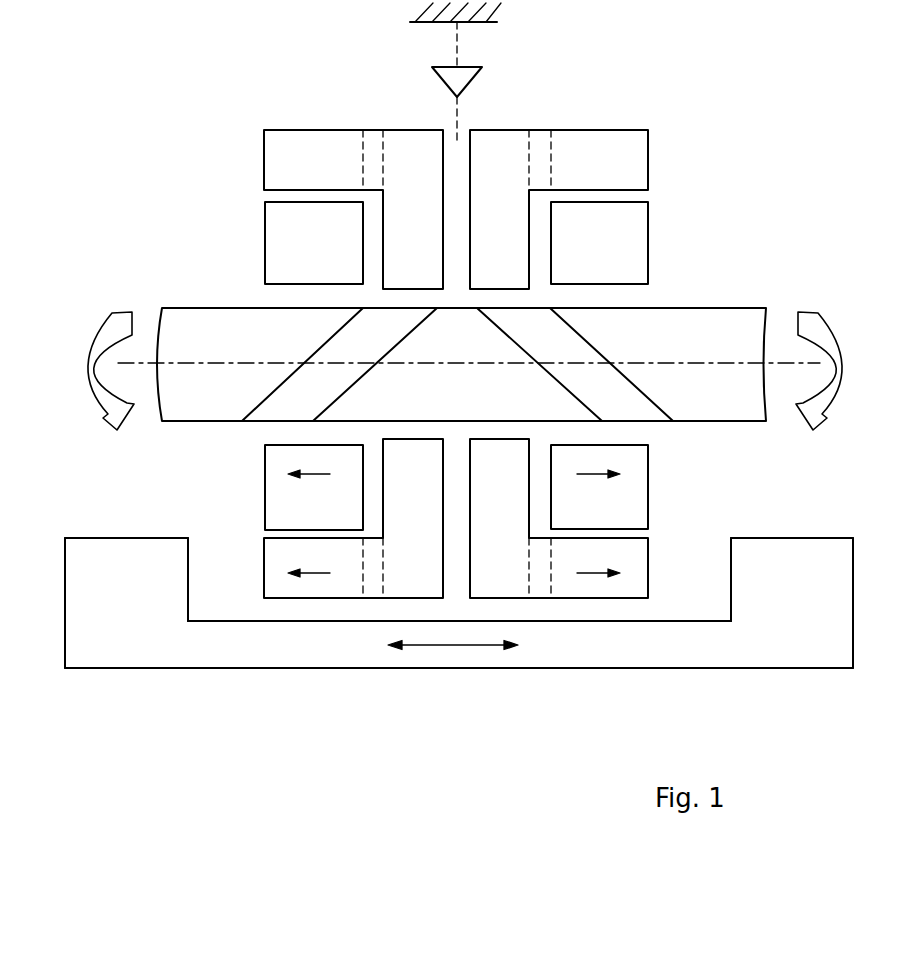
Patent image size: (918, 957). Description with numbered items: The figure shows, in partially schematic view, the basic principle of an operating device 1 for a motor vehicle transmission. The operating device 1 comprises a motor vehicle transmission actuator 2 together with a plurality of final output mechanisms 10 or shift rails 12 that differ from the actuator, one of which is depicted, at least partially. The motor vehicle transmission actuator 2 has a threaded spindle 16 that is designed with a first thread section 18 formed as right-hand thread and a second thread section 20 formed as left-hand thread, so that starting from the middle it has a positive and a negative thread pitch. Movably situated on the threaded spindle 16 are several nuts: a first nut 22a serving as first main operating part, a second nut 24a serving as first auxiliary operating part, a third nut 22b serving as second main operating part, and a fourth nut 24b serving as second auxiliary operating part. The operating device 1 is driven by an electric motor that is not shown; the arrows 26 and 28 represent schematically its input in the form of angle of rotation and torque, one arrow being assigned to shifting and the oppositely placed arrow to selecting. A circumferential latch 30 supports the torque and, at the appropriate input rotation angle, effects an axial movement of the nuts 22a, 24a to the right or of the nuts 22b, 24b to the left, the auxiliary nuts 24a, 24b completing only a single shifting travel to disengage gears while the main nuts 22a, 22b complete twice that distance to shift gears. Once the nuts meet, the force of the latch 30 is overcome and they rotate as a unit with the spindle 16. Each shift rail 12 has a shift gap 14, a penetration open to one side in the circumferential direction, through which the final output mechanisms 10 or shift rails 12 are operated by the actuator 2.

The operating device 1 is at (282, 718).
The motor vehicle transmission actuator 2 is at (142, 462).
The final output mechanism 10 is at (814, 558).
The shift rail 12 is at (123, 610).
The shift gap 14 is at (686, 585).
The threaded spindle 16 is at (235, 328).
The first thread section 18 is at (690, 332).
The second thread section 20 is at (217, 340).
The first nut 22a is at (634, 217).
The third nut 22b is at (306, 237).
The second nut 24a is at (605, 143).
The fourth nut 24b is at (315, 160).
The arrow 26 is at (112, 327).
The arrow 28 is at (813, 327).
The circumferential latch 30 is at (463, 77).